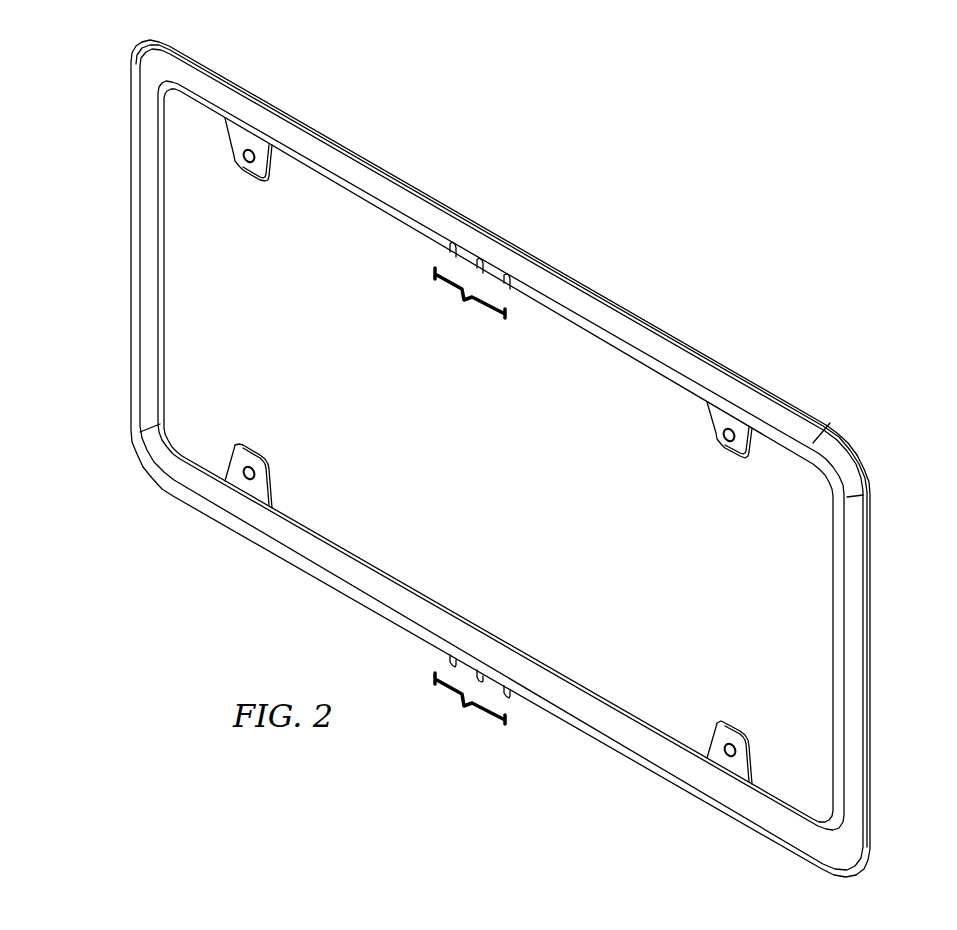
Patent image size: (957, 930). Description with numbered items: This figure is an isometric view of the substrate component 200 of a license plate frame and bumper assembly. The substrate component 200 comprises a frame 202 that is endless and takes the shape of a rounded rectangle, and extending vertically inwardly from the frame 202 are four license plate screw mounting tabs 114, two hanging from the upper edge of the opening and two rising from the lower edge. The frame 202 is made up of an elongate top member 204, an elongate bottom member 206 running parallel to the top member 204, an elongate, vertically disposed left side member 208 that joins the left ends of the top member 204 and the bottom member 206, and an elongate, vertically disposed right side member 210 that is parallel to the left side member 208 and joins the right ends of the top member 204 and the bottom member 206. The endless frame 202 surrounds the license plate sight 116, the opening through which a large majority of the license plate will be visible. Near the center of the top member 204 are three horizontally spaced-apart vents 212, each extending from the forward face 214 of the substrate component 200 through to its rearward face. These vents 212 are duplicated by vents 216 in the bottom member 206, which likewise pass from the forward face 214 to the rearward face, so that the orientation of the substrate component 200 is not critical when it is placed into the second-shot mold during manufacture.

The substrate component 200 is at (496, 458).
The frame 202 is at (688, 356).
The top member 204 is at (415, 197).
The bottom member 206 is at (338, 592).
The left side member 208 is at (137, 268).
The right side member 210 is at (857, 668).
The vent 212 is at (472, 289).
The forward face 214 is at (378, 205).
The vent 216 is at (472, 699).
The license plate screw mounting tab 114 is at (248, 174).
The license plate sight 116 is at (497, 477).